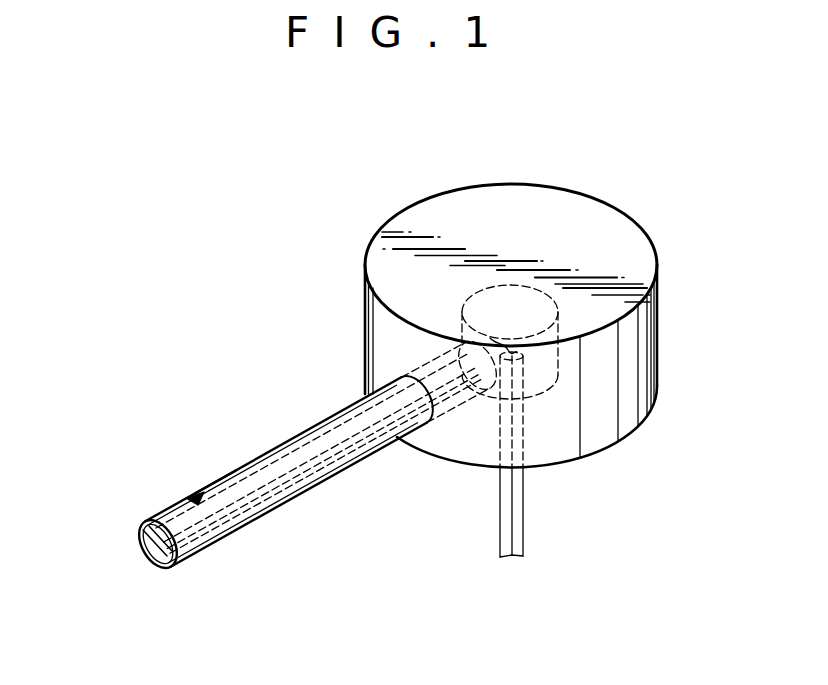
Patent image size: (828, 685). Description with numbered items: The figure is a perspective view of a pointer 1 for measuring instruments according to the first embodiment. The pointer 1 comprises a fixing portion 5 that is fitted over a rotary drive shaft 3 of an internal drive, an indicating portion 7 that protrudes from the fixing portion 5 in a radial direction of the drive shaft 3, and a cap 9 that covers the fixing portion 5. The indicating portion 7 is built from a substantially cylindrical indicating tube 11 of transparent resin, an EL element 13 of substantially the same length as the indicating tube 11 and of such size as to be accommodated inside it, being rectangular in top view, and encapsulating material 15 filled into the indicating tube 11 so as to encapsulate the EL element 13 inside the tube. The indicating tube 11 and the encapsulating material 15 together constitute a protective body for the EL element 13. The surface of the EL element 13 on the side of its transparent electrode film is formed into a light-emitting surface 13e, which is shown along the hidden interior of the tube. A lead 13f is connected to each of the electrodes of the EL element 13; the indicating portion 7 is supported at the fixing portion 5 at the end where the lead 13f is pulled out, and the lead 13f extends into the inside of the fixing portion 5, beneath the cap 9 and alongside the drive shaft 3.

The pointer 1 is at (323, 268).
The rotary drive shaft 3 is at (513, 508).
The fixing portion 5 is at (560, 360).
The indicating portion 7 is at (290, 497).
The cap 9 is at (612, 230).
The indicating tube 11 is at (232, 471).
The EL element 13 is at (185, 495).
The light-emitting surface 13e is at (287, 463).
The lead 13f is at (496, 345).
The encapsulating material 15 is at (148, 553).